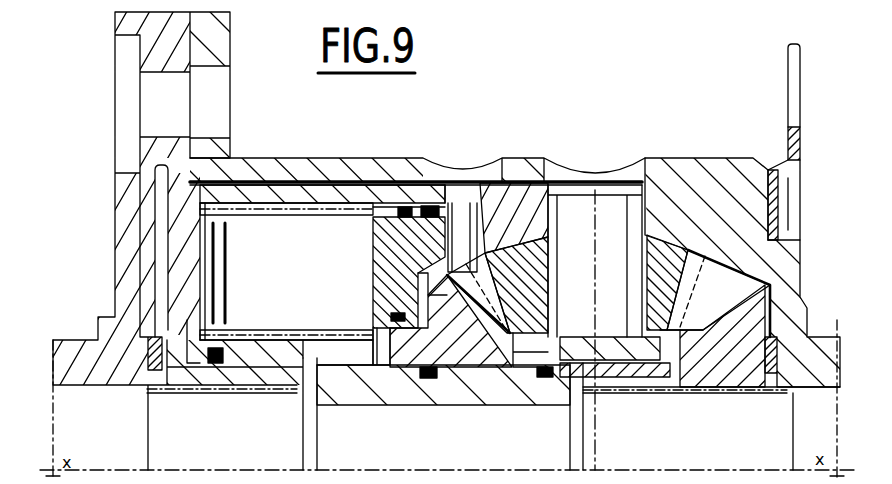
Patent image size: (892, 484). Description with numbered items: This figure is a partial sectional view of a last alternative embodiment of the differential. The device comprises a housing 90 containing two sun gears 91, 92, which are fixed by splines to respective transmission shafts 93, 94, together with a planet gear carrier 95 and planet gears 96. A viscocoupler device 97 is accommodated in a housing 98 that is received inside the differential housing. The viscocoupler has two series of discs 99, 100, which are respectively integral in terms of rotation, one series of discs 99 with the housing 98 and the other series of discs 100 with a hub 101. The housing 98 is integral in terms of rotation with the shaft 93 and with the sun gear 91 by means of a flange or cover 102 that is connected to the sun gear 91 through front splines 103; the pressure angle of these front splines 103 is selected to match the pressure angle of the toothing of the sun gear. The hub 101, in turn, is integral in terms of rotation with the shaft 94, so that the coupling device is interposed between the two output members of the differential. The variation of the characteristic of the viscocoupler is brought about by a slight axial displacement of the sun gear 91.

The housing 90 is at (263, 170).
The sun gear 91 is at (447, 358).
The sun gear 92 is at (698, 370).
The transmission shaft 93 is at (178, 242).
The transmission shaft 94 is at (711, 257).
The planet gear carrier 95 is at (583, 203).
The planet gears 96 is at (683, 233).
The viscocoupler device 97 is at (213, 207).
The housing 98 is at (357, 190).
The discs 99 is at (233, 258).
The discs 100 is at (230, 290).
The hub 101 is at (530, 397).
The flange or cover 102 is at (378, 298).
The front splines 103 is at (382, 276).